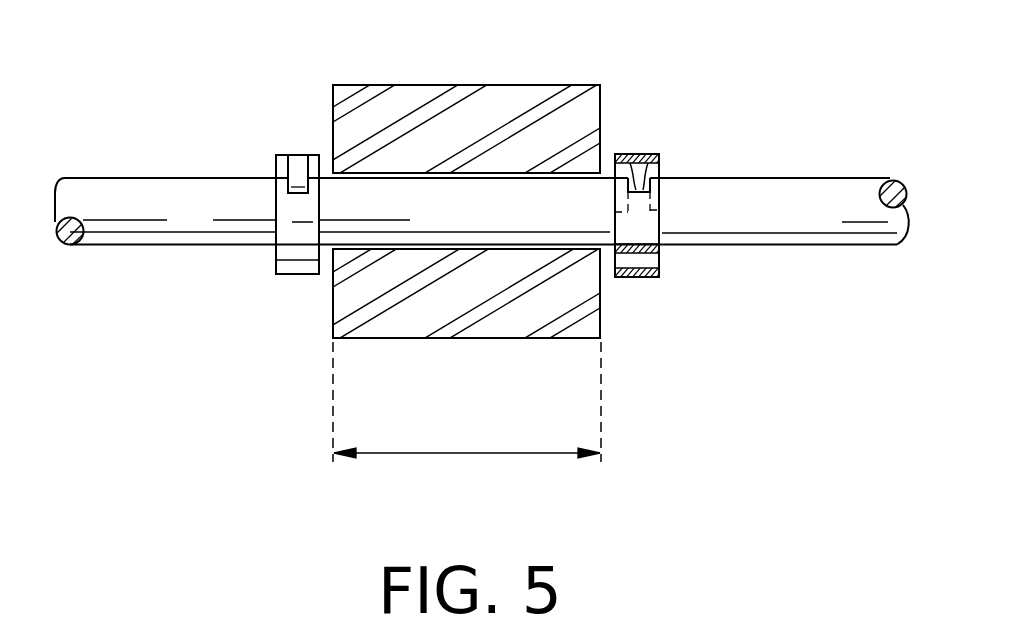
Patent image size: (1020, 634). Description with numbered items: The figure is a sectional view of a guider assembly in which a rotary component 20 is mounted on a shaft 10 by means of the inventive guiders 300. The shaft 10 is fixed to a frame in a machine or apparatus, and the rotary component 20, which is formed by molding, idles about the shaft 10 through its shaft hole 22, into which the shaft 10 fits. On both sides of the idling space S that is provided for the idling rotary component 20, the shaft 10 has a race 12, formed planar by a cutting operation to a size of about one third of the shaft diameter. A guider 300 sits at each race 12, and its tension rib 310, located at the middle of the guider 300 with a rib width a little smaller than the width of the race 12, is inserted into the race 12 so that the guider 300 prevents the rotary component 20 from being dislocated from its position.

The shaft 10 is at (177, 191).
The race 12 is at (293, 178).
The rotary component 20 is at (500, 97).
The shaft hole 22 is at (338, 174).
The guider 300 is at (298, 252).
The tension rib 310 is at (631, 157).
The idling space S is at (467, 454).